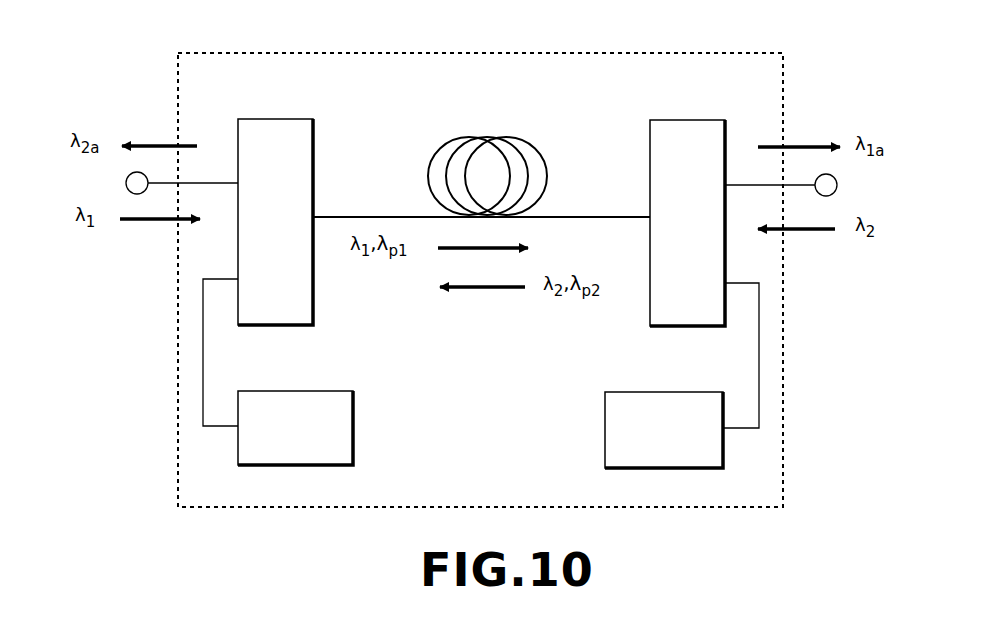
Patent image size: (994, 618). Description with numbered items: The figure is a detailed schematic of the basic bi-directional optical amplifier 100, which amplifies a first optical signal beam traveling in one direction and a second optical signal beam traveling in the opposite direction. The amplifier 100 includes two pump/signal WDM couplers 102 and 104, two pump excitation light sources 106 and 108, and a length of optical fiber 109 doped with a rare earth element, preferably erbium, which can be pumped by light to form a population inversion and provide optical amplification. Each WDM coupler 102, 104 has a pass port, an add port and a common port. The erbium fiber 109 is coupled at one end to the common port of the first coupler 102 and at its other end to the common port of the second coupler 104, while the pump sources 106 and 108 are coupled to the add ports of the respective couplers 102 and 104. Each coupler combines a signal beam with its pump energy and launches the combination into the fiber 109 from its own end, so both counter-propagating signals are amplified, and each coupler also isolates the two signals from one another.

The bi-directional optical amplifier 100 is at (680, 53).
The first pump/signal WDM coupler 102 is at (265, 119).
The second pump/signal WDM coupler 104 is at (675, 120).
The pump excitation light source 106 is at (305, 391).
The pump excitation light source 108 is at (675, 392).
The optical erbium fiber 109 is at (505, 134).